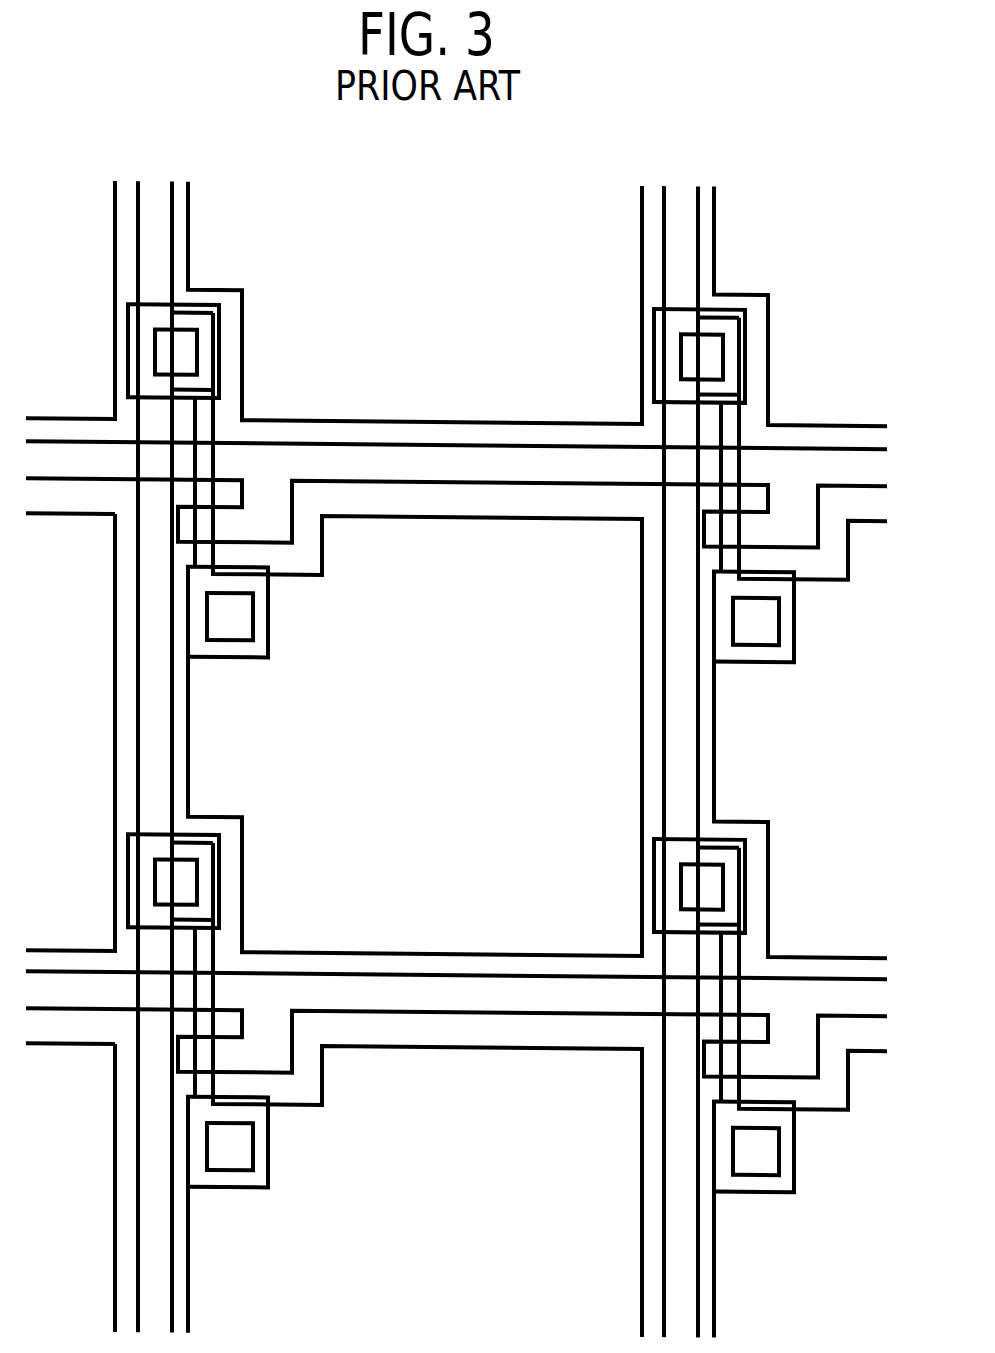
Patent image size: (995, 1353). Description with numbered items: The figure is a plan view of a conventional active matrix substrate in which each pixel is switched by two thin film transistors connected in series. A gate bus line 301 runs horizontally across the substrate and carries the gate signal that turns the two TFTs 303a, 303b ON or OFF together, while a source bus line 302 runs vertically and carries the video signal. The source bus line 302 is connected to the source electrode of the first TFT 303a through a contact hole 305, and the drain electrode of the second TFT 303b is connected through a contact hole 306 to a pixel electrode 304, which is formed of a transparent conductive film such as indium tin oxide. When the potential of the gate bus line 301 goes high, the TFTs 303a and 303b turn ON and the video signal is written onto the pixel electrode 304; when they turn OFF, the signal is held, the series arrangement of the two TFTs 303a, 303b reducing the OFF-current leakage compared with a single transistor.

The gate bus line 301 is at (443, 445).
The source bus line 302 is at (172, 768).
The thin film transistor 303a is at (213, 462).
The thin film transistor 303b is at (213, 527).
The pixel electrode 304 is at (497, 519).
The contact hole 305 is at (185, 327).
The contact hole 306 is at (253, 617).